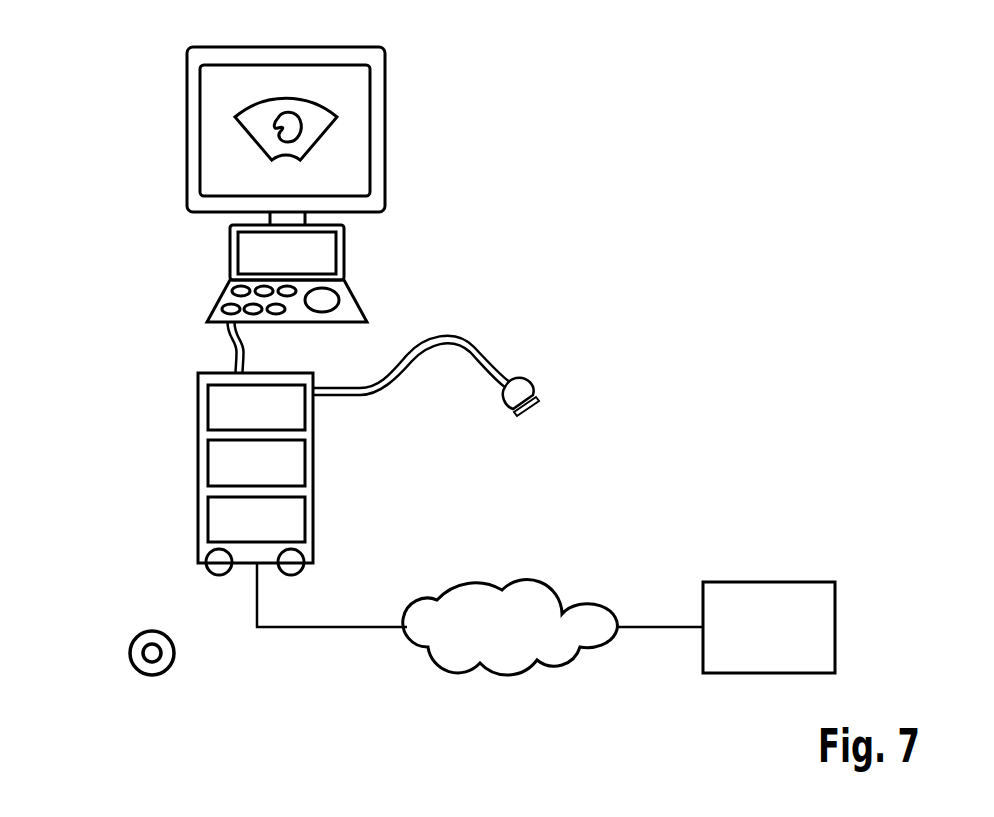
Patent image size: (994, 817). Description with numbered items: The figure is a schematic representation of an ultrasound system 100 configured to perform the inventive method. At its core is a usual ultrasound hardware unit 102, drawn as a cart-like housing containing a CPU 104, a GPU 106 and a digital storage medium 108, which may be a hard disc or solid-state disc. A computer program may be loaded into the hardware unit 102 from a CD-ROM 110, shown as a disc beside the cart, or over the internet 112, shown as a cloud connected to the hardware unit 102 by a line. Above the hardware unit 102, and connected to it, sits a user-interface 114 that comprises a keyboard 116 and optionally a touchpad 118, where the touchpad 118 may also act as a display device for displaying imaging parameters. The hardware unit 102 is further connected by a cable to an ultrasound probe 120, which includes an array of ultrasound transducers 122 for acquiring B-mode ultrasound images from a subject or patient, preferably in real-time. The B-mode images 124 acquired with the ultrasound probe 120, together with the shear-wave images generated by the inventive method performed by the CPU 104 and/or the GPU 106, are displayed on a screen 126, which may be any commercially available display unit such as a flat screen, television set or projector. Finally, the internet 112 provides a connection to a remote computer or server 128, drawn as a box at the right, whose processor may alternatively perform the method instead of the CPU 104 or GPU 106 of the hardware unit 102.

The ultrasound system 100 is at (445, 73).
The ultrasound hardware unit 102 is at (261, 474).
The CPU 104 is at (198, 405).
The GPU 106 is at (198, 463).
The digital storage medium 108 is at (198, 518).
The CD-ROM 110 is at (128, 652).
The internet 112 is at (475, 583).
The user-interface 114 is at (266, 269).
The keyboard 116 is at (358, 302).
The touchpad 118 is at (344, 243).
The ultrasound probe 120 is at (530, 385).
The array of ultrasound transducers 122 is at (538, 400).
The B-mode images 124 is at (243, 130).
The screen 126 is at (385, 128).
The remote computer or server 128 is at (773, 582).